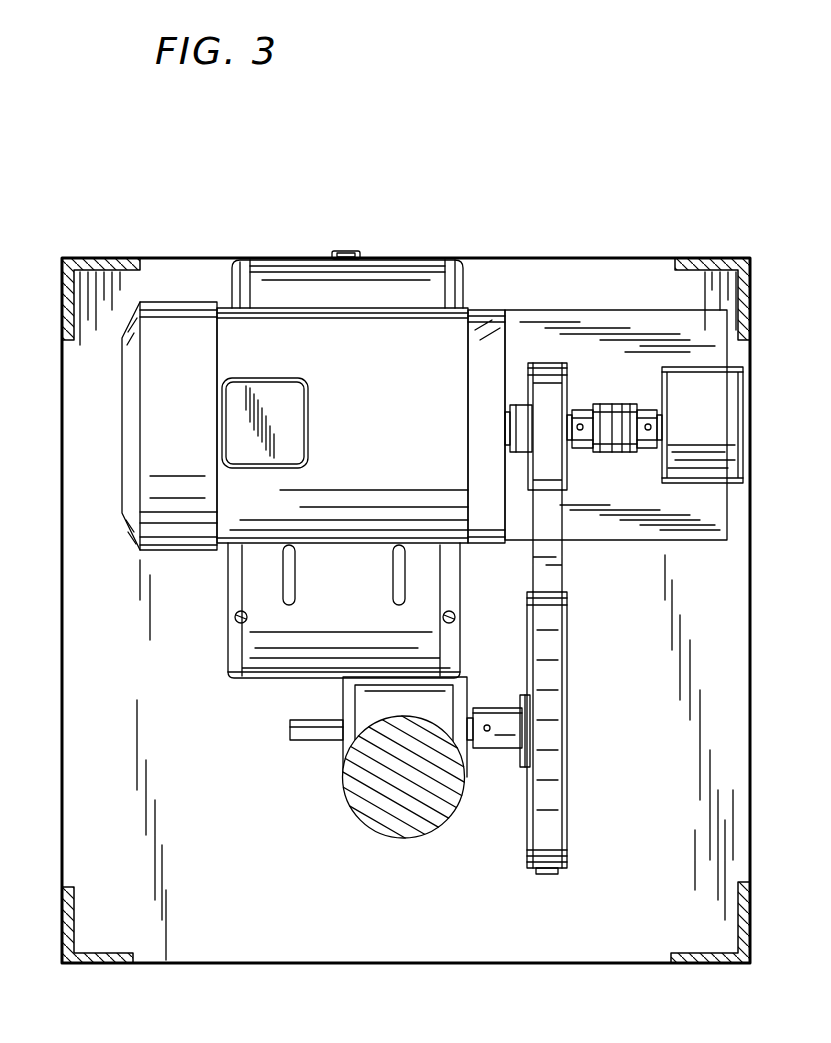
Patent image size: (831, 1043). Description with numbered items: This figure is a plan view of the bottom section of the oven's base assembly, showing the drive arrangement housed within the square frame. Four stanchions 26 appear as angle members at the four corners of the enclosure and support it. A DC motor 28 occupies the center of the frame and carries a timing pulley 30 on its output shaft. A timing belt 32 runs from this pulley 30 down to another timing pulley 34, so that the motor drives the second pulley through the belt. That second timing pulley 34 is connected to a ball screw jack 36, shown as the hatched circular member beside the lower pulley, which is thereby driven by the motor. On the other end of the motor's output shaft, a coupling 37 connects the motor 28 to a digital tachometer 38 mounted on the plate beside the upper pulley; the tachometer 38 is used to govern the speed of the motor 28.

The stanchion 26 is at (63, 278).
The DC motor 28 is at (388, 394).
The timing pulley 30 is at (567, 372).
The timing belt 32 is at (552, 868).
The timing pulley 34 is at (563, 862).
The ball screw jack 36 is at (413, 839).
The coupling 37 is at (628, 453).
The digital tachometer 38 is at (733, 407).